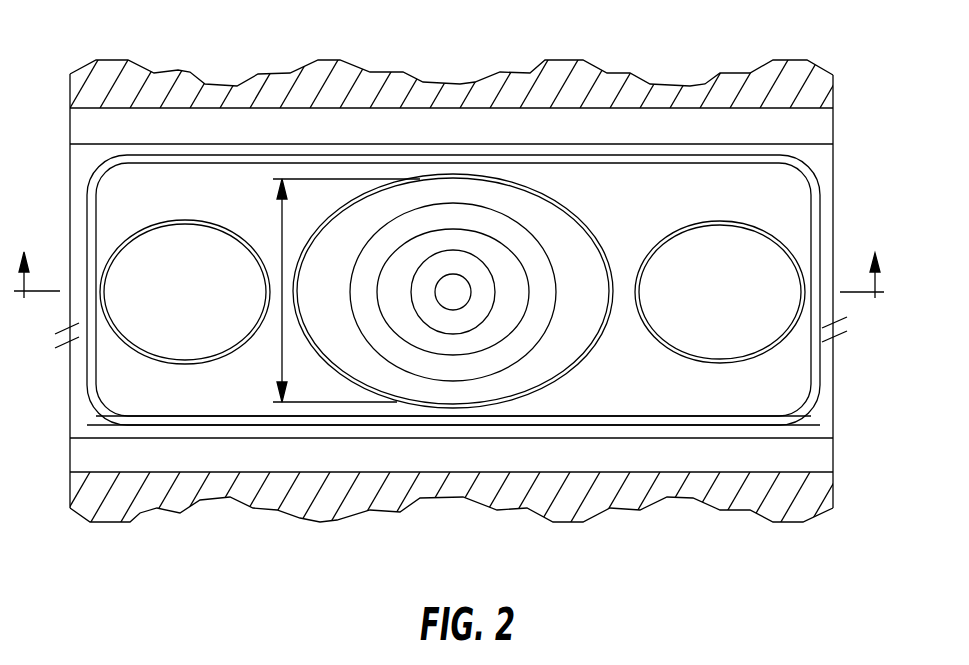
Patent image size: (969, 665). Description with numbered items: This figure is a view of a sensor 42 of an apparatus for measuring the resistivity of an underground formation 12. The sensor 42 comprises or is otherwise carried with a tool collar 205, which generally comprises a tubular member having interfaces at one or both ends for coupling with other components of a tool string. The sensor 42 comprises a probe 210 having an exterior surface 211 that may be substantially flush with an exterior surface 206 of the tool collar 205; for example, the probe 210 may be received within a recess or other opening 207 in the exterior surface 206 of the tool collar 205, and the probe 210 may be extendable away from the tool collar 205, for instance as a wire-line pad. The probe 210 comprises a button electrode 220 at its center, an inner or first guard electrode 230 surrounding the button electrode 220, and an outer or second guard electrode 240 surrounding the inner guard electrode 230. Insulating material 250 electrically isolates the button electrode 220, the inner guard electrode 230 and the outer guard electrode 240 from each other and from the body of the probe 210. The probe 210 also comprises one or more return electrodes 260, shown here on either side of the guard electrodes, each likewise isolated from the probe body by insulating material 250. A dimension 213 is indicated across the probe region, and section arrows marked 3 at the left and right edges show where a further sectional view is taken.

The formation 12 is at (112, 73).
The sensor 42 is at (310, 120).
The tool collar 205 is at (173, 440).
The exterior surface of the tool collar 206 is at (95, 425).
The recess or other opening 207 is at (260, 427).
The probe 210 is at (453, 420).
The exterior surface of the probe 211 is at (352, 410).
The width dimension 213 is at (343, 290).
The button electrode 220 is at (467, 277).
The inner guard electrode 230 is at (506, 244).
The outer guard electrode 240 is at (558, 208).
The insulating material 250 is at (182, 221).
The return electrodes 260 is at (234, 239).
The section line 3- 3 is at (449, 260).